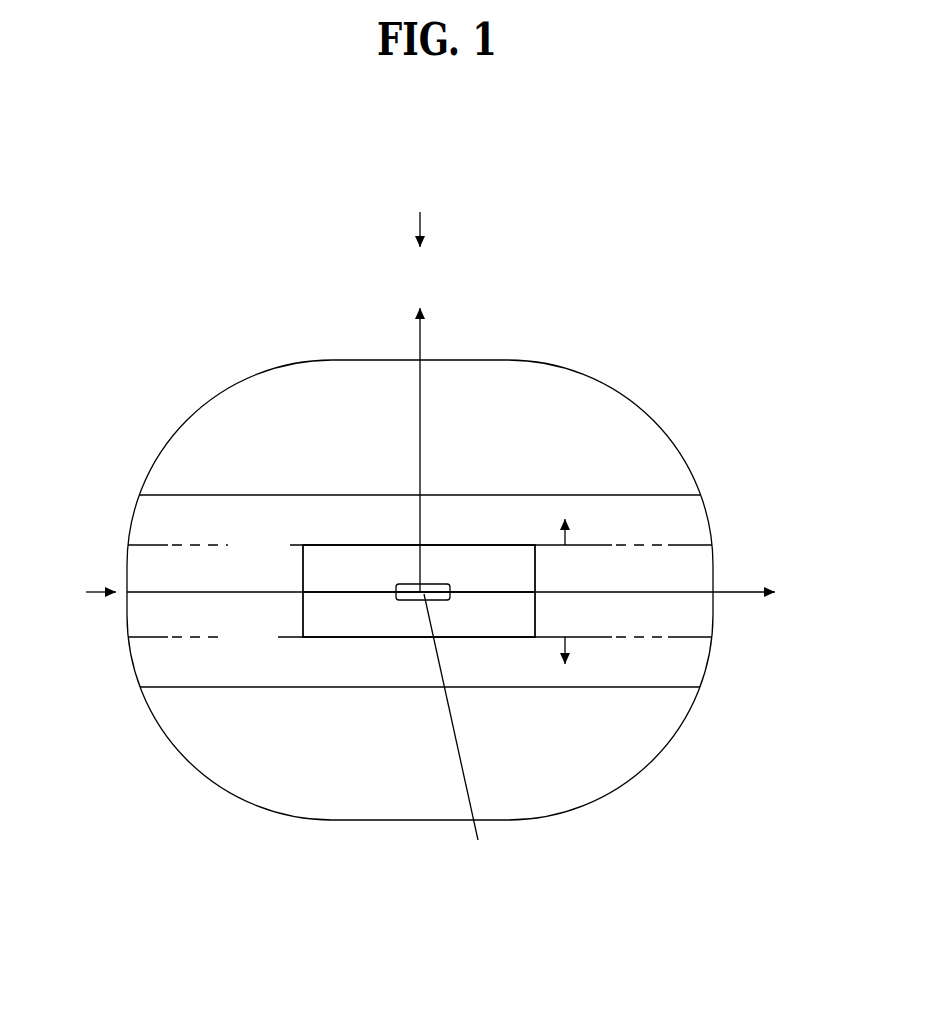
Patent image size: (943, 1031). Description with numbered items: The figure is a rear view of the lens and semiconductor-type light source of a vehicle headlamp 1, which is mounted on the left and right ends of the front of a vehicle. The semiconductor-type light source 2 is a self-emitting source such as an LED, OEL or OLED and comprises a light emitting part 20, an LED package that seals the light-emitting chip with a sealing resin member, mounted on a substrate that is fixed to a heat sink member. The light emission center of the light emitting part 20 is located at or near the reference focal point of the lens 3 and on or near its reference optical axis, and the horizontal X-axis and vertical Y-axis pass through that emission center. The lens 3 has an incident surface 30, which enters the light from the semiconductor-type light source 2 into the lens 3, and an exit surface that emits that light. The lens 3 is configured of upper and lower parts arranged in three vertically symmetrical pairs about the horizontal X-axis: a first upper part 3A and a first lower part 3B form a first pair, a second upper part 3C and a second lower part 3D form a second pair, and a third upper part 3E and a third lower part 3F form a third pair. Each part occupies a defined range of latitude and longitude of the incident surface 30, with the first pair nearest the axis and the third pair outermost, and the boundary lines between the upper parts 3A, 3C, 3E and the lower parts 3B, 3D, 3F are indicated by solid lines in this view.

The vehicle headlamp 1 is at (238, 297).
The semiconductor-type light source 2 is at (385, 608).
The lens 3 is at (560, 367).
The light emitting part 20 is at (410, 600).
The incident surface 30 is at (630, 455).
The first upper part 3A is at (419, 568).
The first lower part 3B is at (419, 614).
The second upper part 3C is at (420, 546).
The second lower part 3D is at (420, 639).
The third upper part 3E is at (420, 458).
The third lower part 3F is at (420, 721).